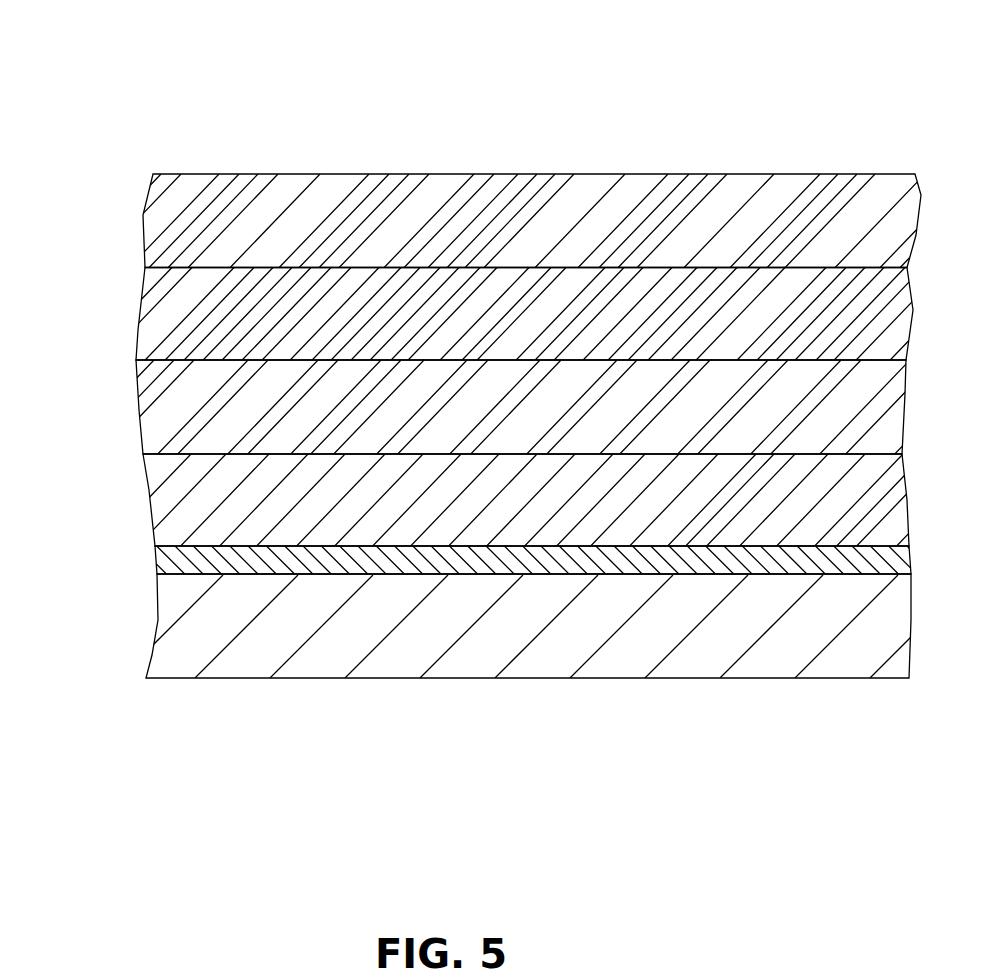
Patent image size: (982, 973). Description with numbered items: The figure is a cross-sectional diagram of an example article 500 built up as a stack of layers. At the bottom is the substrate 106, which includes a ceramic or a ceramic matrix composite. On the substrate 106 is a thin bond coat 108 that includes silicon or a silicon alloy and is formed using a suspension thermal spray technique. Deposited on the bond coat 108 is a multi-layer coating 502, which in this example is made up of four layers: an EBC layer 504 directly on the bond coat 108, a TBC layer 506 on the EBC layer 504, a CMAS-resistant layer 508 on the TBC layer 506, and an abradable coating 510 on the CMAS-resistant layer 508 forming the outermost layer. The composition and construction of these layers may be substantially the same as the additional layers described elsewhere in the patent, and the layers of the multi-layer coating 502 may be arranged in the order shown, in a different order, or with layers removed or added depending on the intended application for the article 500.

The article 500 is at (102, 50).
The multi-layer coating 502 is at (105, 174).
The EBC layer 504 is at (187, 500).
The TBC layer 506 is at (177, 410).
The CMAS-resistant layer 508 is at (180, 322).
The abradable coating 510 is at (182, 226).
The bond coat 108 is at (195, 566).
The substrate 106 is at (202, 631).